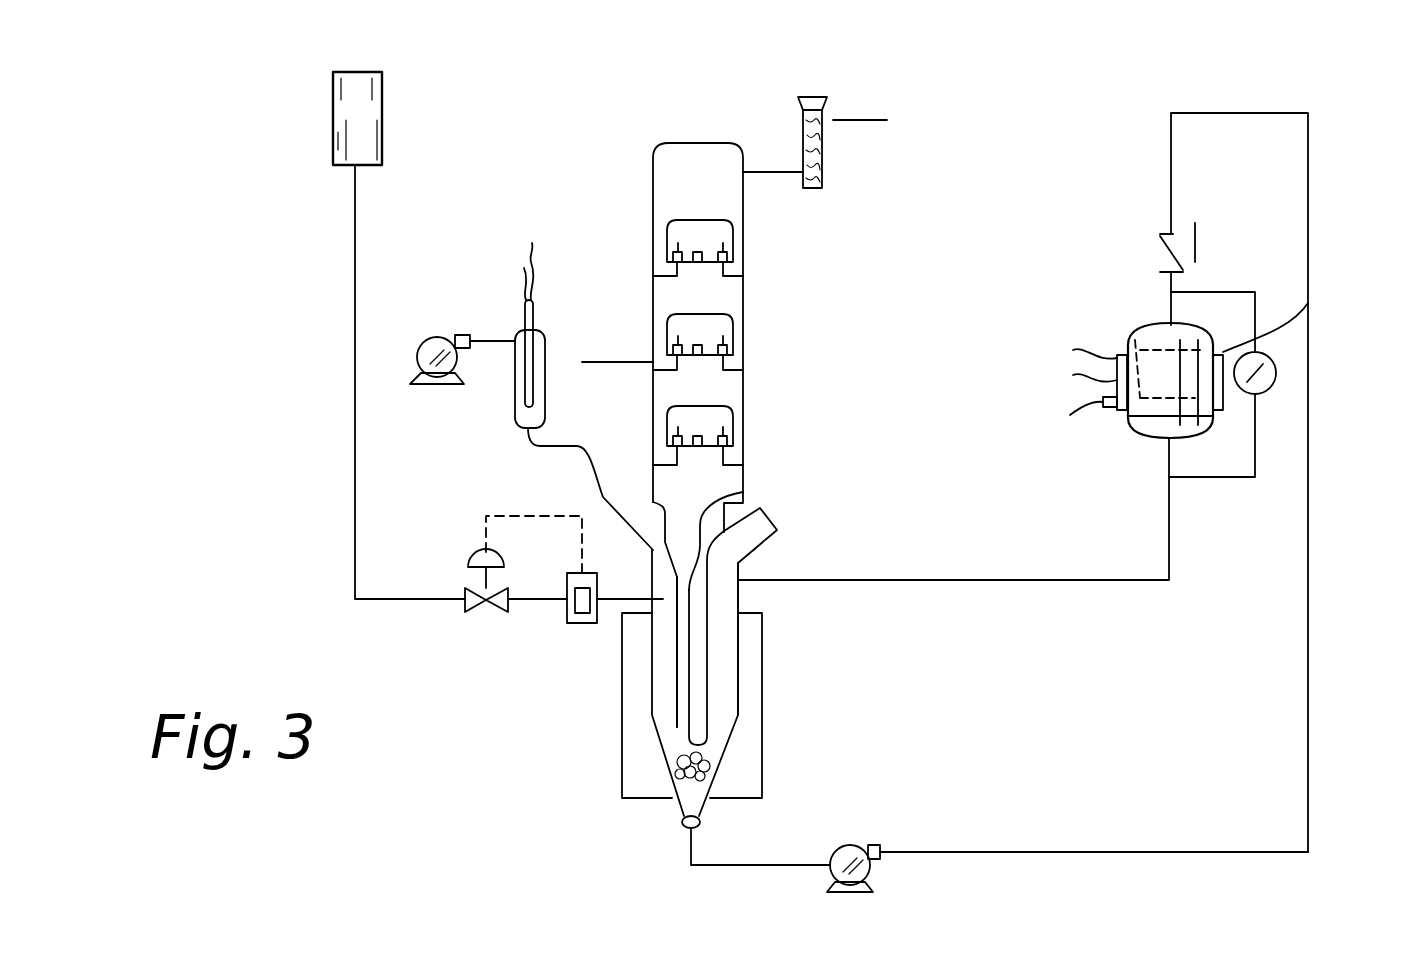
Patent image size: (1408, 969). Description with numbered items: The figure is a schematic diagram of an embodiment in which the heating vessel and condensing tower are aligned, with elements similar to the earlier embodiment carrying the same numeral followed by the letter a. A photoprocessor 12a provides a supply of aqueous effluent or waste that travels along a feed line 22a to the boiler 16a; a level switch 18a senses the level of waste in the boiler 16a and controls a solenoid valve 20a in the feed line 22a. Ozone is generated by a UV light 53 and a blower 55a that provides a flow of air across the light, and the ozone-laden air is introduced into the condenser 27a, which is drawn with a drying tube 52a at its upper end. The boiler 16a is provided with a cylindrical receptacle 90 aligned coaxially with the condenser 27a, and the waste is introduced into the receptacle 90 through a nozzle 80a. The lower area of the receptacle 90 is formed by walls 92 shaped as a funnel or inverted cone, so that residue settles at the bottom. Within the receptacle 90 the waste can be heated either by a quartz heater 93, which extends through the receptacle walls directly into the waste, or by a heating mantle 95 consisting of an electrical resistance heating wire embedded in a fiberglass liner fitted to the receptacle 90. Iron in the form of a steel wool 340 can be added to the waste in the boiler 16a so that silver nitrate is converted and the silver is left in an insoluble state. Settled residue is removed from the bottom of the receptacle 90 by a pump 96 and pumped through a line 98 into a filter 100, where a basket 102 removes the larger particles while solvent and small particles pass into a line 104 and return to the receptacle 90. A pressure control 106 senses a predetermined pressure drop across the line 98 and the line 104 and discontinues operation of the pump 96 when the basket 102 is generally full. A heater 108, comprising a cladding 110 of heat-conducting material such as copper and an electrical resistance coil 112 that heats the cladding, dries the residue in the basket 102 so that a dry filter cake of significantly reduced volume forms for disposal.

The photoprocessor 12a is at (382, 118).
The feed line 22a is at (355, 243).
The solenoid valve 20a is at (464, 577).
The level switch 18a is at (565, 625).
The blower 55a is at (432, 338).
The UV light 53 is at (548, 335).
The condenser 27a is at (762, 326).
The drying tube 52a is at (822, 178).
The quartz heater 93 is at (738, 485).
The nozzle 80a is at (663, 608).
The boiler 16a is at (640, 722).
The walls 92 is at (663, 770).
The steel wool 340 is at (712, 767).
The cylindrical receptacle 90 is at (755, 655).
The heating mantle 95 is at (740, 712).
The pump 96 is at (850, 843).
The line 98 is at (1171, 143).
The line 104 is at (1172, 553).
The filter 100 is at (1152, 321).
The basket 102 is at (1130, 330).
The cladding 110 is at (1272, 357).
The electrical resistance coil 112 is at (1103, 405).
The pressure control 106 is at (1274, 399).
The heater 108 is at (1127, 437).